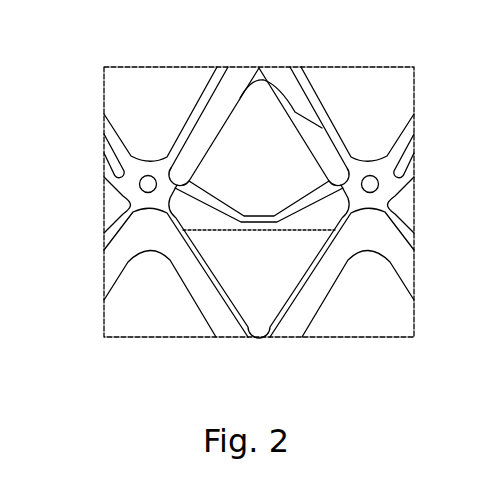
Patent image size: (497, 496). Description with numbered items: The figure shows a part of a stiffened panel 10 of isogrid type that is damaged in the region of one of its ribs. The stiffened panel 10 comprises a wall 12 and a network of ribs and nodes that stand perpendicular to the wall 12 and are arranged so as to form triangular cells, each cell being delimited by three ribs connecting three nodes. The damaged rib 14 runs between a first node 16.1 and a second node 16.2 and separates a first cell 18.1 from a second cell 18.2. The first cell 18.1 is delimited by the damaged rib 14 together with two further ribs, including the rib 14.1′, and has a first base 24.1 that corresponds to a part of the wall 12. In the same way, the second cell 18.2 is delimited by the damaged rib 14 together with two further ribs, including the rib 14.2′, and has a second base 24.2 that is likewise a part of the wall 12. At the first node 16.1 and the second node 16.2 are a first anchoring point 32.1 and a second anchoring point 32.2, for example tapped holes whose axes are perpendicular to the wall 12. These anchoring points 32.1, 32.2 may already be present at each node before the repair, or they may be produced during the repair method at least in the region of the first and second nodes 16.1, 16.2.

The stiffened panel 10 is at (84, 73).
The wall 12 is at (389, 304).
The rib 14 is at (311, 194).
The rib 14.1′ is at (354, 118).
The rib 14.2′ is at (321, 306).
The first node 16.1 is at (410, 153).
The second node 16.2 is at (108, 153).
The first cell 18.1 is at (244, 137).
The second cell 18.2 is at (262, 279).
The first base 24.1 is at (268, 126).
The second base 24.2 is at (227, 267).
The first anchoring point 32.1 is at (381, 184).
The second anchoring point 32.2 is at (137, 184).